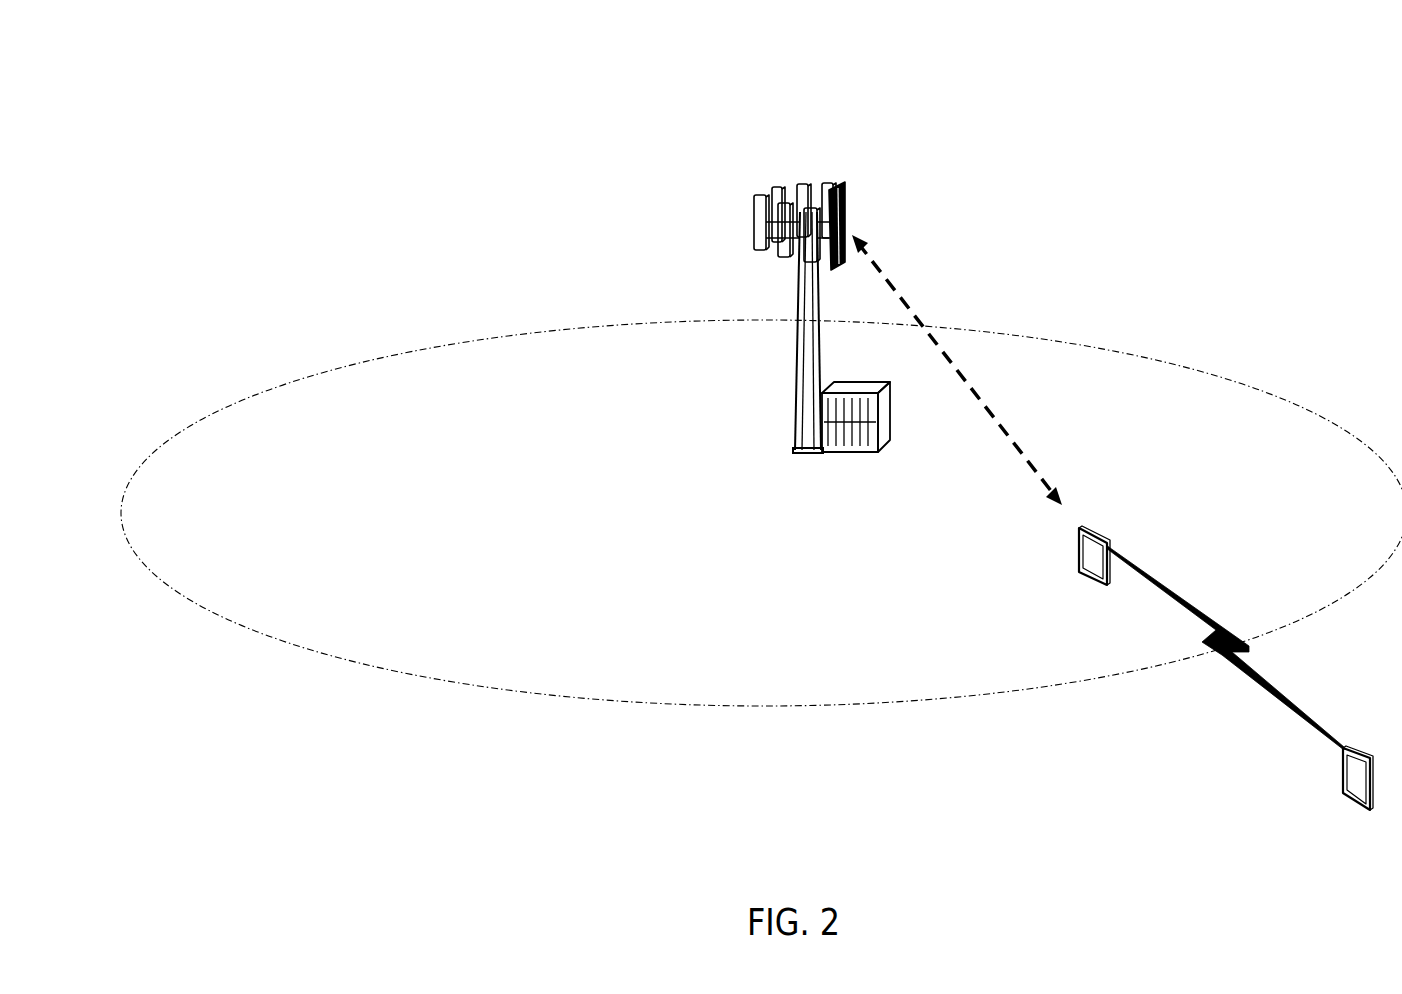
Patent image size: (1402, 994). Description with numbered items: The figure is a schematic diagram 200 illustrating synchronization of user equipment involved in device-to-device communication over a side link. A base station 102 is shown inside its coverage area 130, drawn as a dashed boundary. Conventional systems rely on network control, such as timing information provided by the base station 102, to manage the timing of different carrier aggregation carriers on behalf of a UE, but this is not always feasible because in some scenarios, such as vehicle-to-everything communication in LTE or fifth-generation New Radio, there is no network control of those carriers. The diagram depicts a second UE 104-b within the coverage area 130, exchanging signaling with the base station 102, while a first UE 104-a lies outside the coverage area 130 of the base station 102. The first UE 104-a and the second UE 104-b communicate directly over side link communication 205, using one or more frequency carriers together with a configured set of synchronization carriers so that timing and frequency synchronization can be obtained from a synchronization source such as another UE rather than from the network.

The schematic diagram 200 is at (131, 53).
The coverage area 130 is at (680, 708).
The base station 102 is at (795, 447).
The second UE 104-b is at (1090, 583).
The side link communication 205 is at (1232, 665).
The first UE 104-a is at (1340, 760).